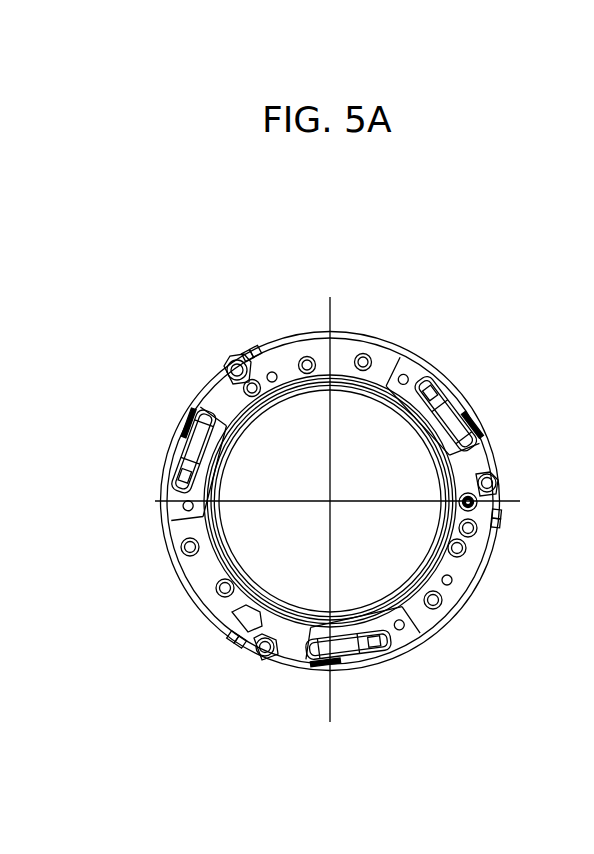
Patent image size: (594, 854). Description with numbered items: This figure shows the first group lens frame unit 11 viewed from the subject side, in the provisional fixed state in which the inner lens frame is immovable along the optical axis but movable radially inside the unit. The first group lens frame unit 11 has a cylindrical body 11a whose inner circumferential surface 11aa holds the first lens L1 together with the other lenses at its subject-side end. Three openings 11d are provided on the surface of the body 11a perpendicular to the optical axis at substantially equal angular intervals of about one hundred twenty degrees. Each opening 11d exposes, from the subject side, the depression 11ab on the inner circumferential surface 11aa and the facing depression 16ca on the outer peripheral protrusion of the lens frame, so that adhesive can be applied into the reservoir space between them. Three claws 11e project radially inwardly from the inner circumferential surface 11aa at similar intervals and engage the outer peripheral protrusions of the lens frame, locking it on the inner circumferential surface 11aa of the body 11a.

The first group lens frame unit 11 is at (214, 330).
The first lens L1 is at (313, 420).
The body 11a is at (387, 354).
The inner circumferential surface 11aa is at (465, 428).
The depression (adhesive reservoir) 11ab is at (468, 446).
The opening 11d is at (412, 373).
The claw 11e is at (468, 432).
The depression (adhesive reservoir) 16ca is at (439, 411).